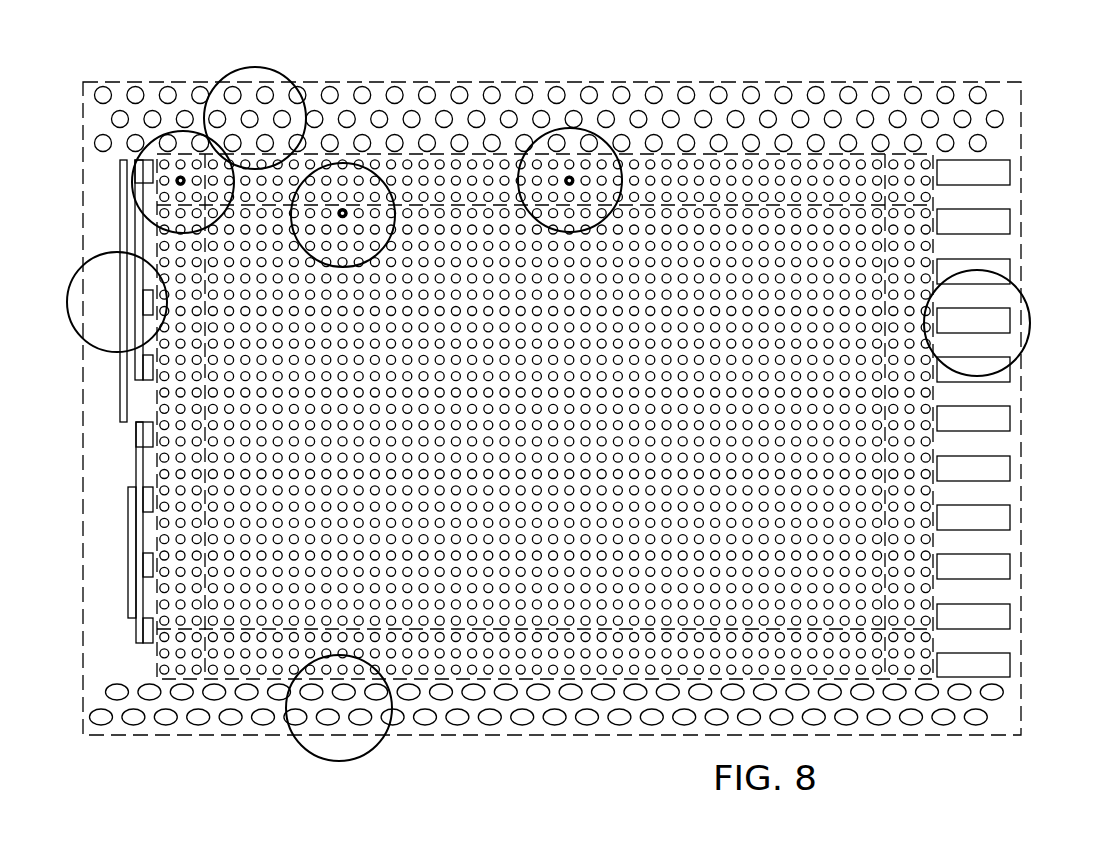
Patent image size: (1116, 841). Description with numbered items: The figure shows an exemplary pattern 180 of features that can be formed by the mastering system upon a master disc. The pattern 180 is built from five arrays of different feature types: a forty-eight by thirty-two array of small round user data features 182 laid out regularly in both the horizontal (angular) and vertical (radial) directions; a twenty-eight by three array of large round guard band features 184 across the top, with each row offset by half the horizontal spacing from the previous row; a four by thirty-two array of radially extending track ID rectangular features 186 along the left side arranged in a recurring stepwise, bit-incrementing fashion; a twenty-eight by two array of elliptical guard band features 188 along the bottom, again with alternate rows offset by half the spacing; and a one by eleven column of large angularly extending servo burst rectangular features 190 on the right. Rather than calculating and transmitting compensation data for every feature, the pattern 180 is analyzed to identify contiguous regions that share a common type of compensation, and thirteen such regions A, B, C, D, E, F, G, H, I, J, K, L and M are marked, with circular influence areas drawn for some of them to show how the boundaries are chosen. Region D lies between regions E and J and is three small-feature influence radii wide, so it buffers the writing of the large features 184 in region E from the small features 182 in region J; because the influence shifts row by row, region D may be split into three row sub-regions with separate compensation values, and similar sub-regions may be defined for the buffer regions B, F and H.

The pattern 180 is at (975, 50).
The small round features 182 is at (715, 158).
The large round features 184 is at (832, 126).
The radially extending rectangular features 186 is at (127, 580).
The elliptical features 188 is at (520, 726).
The angularly extending rectangular features 190 is at (1011, 466).
The region A is at (178, 157).
The region B is at (158, 245).
The region C is at (172, 673).
The region D is at (382, 157).
The region E is at (463, 213).
The region F is at (400, 675).
The region G is at (902, 675).
The region H is at (931, 398).
The region I is at (930, 193).
The region J is at (603, 88).
The region K is at (97, 415).
The region L is at (630, 730).
The region M is at (1010, 593).